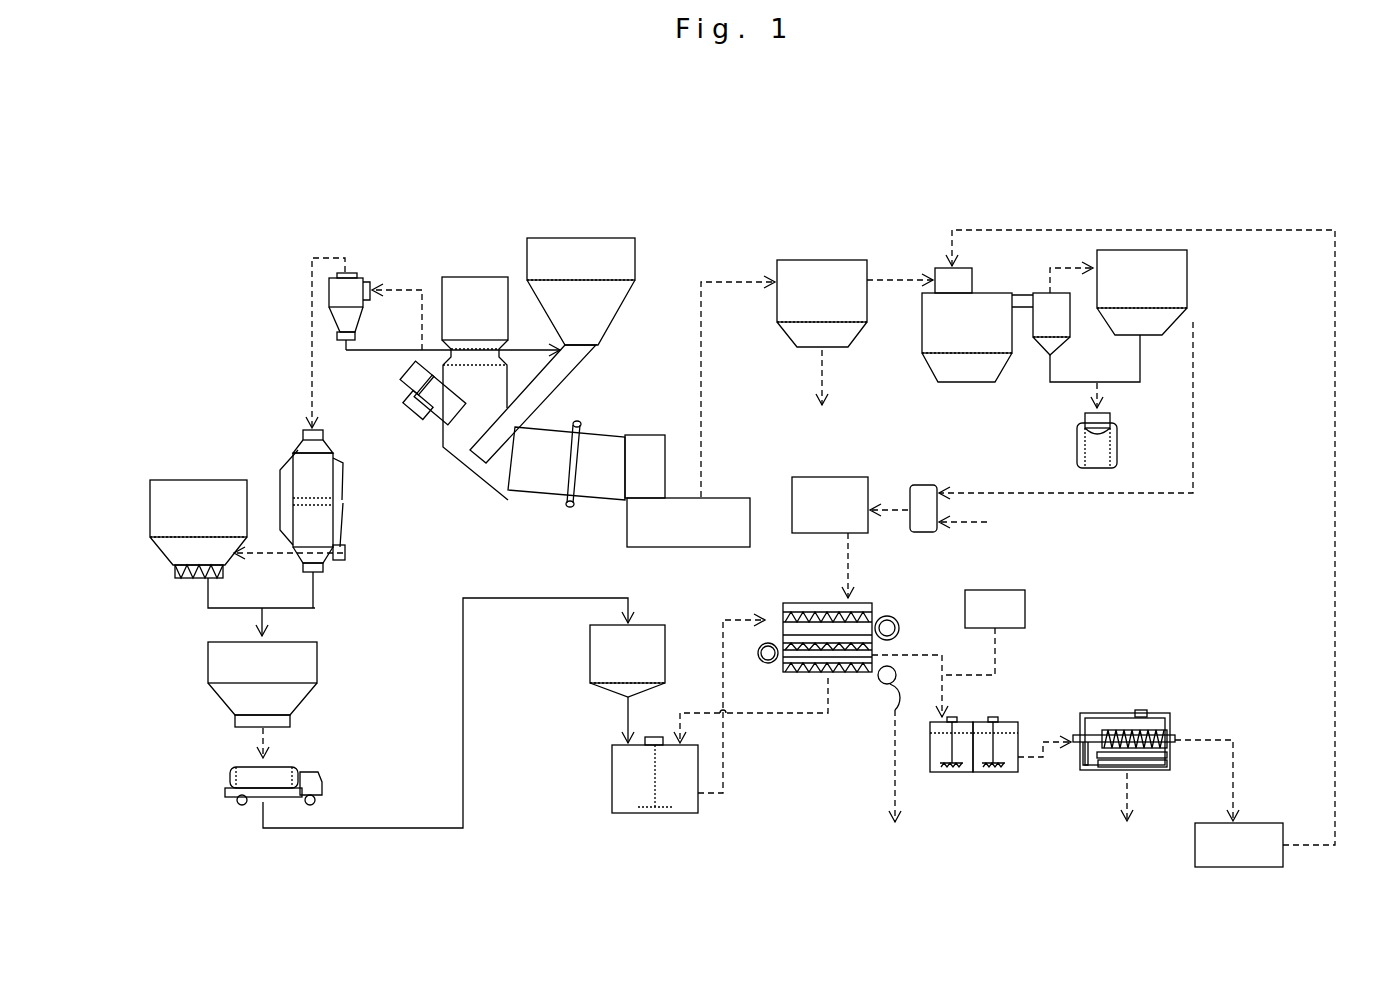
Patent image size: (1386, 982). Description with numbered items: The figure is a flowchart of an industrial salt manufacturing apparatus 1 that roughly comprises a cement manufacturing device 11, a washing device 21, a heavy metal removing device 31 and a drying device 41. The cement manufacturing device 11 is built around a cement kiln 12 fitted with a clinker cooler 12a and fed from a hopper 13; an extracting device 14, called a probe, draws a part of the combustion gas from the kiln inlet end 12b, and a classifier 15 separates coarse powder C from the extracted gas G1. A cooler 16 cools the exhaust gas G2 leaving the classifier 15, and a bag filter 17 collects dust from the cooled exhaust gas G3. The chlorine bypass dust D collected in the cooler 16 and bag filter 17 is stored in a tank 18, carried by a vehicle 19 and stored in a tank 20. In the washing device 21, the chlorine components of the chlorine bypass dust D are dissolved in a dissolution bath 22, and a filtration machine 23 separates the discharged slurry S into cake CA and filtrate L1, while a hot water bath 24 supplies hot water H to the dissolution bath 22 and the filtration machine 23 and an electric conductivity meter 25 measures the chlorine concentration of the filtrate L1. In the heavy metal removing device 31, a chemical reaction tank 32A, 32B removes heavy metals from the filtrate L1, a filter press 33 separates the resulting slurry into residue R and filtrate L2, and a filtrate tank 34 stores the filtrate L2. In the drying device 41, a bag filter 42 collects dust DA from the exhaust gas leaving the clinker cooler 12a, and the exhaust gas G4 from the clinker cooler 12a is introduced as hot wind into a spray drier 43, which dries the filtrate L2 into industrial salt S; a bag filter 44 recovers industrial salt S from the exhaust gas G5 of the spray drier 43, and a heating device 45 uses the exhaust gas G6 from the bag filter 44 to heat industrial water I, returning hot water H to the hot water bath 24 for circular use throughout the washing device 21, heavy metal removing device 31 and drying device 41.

The industrial salt manufacturing apparatus 1 is at (750, 167).
The cement manufacturing device 11 is at (239, 347).
The cement kiln 12 is at (540, 496).
The clinker cooler 12a is at (713, 498).
The kiln inlet end 12b is at (477, 477).
The hopper 13 is at (637, 258).
The extracting device 14 is at (428, 424).
The classifier 15 is at (356, 273).
The cooler 16 is at (297, 453).
The bag filter 17 is at (200, 480).
The tank 18 is at (222, 698).
The vehicle 19 is at (230, 773).
The tank 20 is at (590, 657).
The washing device 21 is at (715, 871).
The dissolution bath 22 is at (612, 780).
The filtration machine 23 is at (830, 603).
The hot water bath 24 is at (830, 477).
The electric conductivity meter 25 is at (995, 590).
The heavy metal removing device 31 is at (1084, 867).
The chemical reaction tank 32A is at (943, 772).
The chemical reaction tank 32B is at (1000, 772).
The filter press 33 is at (1108, 713).
The filtrate tank 34 is at (1253, 822).
The drying device 41 is at (1054, 205).
The bag filter 42 is at (822, 260).
The spray drier 43 is at (921, 330).
The bag filter 44 is at (1190, 280).
The heating device 45 is at (925, 485).
The coarse powder C is at (453, 363).
The chlorine bypass dust D is at (445, 701).
The slurry S is at (892, 576).
The hot water H is at (858, 565).
The industrial water I is at (973, 523).
The residue R is at (1138, 797).
The cake CA is at (876, 766).
The dust DA is at (800, 377).
The filtrate L1 is at (910, 673).
The filtrate L2 is at (1204, 770).
The extracted gas G1 is at (397, 308).
The exhaust gas G2 is at (309, 343).
The exhaust gas G3 is at (288, 567).
The exhaust gas G4 is at (738, 389).
The exhaust gas G5 is at (1070, 268).
The exhaust gas G6 is at (1066, 422).